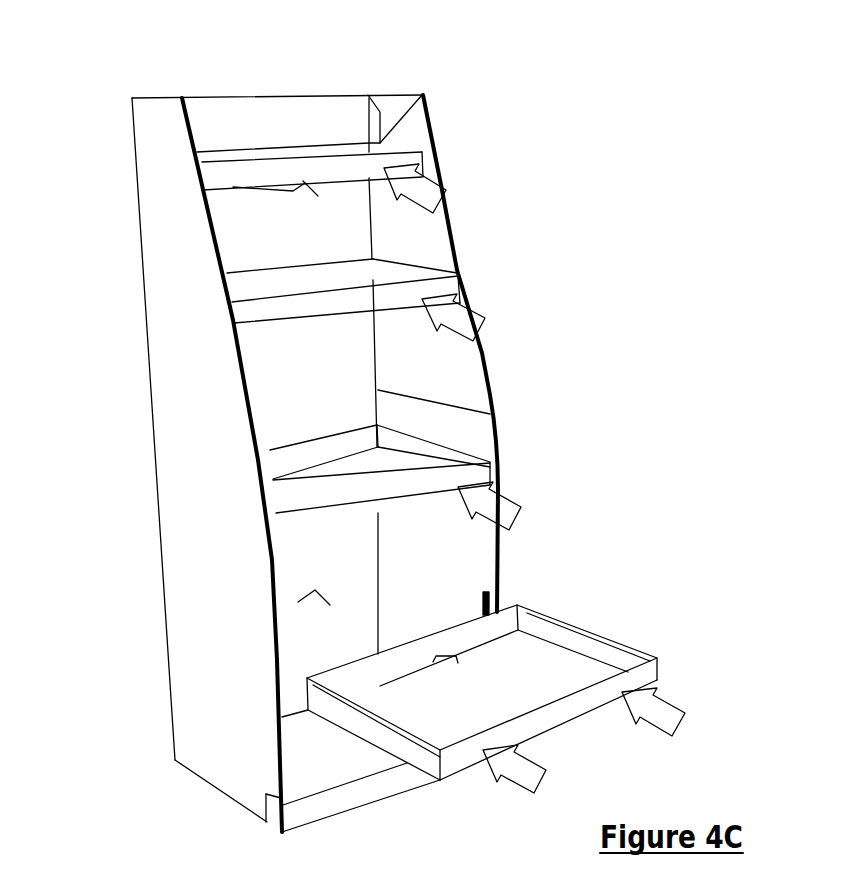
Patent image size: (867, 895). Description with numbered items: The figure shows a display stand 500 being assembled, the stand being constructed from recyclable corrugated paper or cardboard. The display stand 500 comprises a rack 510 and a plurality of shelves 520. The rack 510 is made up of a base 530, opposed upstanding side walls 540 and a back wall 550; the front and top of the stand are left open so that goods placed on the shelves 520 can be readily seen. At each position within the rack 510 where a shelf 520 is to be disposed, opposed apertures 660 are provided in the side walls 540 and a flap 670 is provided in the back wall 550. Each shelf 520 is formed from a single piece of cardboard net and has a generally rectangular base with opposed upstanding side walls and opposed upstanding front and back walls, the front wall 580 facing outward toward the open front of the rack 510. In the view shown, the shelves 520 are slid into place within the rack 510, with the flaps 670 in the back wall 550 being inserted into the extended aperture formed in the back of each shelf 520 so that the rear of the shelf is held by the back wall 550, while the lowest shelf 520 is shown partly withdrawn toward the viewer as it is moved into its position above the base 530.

The display stand 500 is at (530, 226).
The rack 510 is at (158, 196).
The shelves 520 is at (306, 166).
The base 530 is at (322, 755).
The side walls 540 is at (118, 742).
The back wall 550 is at (243, 130).
The front wall 580 is at (563, 715).
The apertures 660 is at (489, 604).
The flap 670 is at (120, 594).